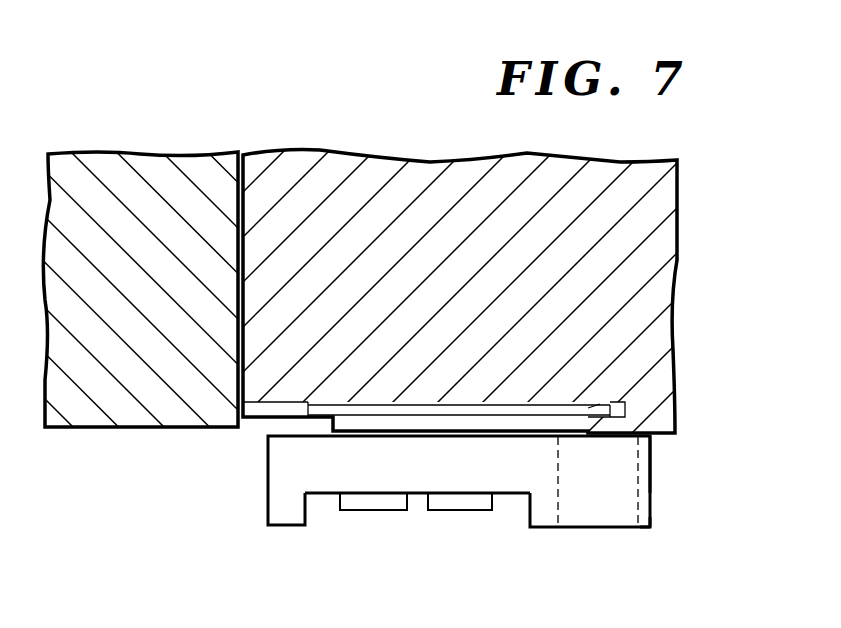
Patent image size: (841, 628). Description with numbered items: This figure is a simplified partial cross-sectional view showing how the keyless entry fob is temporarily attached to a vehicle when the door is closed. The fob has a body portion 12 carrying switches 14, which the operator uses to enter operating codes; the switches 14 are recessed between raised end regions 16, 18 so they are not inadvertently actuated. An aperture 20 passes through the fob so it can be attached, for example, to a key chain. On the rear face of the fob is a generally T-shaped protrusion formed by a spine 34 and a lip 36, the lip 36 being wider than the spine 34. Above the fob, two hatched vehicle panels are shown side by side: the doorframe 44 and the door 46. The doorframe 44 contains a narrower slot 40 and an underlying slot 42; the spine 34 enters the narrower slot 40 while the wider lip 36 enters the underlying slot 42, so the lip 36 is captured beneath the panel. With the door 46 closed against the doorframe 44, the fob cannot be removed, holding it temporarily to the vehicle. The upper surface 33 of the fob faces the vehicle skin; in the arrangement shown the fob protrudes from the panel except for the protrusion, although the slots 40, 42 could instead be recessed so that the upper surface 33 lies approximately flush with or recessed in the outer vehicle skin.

The body portion 12 is at (430, 477).
The switches 14 is at (369, 512).
The raised end region 16 is at (285, 515).
The raised end region 18 is at (650, 482).
The aperture 20 is at (600, 517).
The upper surface 33 is at (645, 530).
The spine 34 is at (512, 427).
The lip 36 is at (588, 408).
The narrower slot 40 is at (253, 422).
The underlying slot 42 is at (623, 408).
The doorframe 44 is at (386, 165).
The door 46 is at (147, 165).